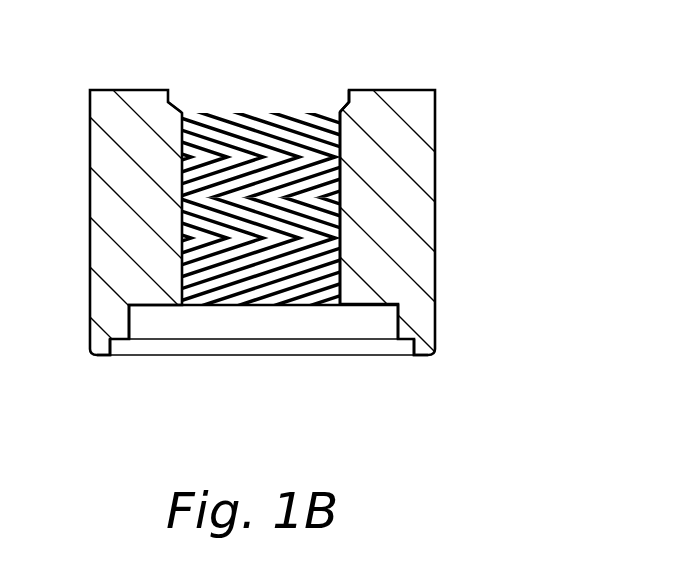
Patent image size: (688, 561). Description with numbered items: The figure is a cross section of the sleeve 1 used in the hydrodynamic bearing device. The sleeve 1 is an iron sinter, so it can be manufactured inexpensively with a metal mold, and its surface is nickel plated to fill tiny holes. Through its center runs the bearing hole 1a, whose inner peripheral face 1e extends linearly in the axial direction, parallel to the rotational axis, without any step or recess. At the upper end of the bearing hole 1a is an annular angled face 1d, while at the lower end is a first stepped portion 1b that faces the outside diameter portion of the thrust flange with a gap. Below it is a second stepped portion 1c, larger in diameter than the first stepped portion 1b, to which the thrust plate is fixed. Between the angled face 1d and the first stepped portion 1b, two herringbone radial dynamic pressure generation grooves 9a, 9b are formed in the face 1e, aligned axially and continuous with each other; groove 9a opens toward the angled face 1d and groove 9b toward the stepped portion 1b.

The sleeve 1 is at (419, 118).
The bearing hole 1a is at (321, 71).
The first stepped portion 1b is at (368, 304).
The second stepped portion 1c is at (398, 340).
The annular angled face 1d is at (340, 101).
The inner peripheral face 1e is at (322, 112).
The radial dynamic pressure generation groove 9a is at (361, 147).
The radial dynamic pressure generation groove 9b is at (361, 238).